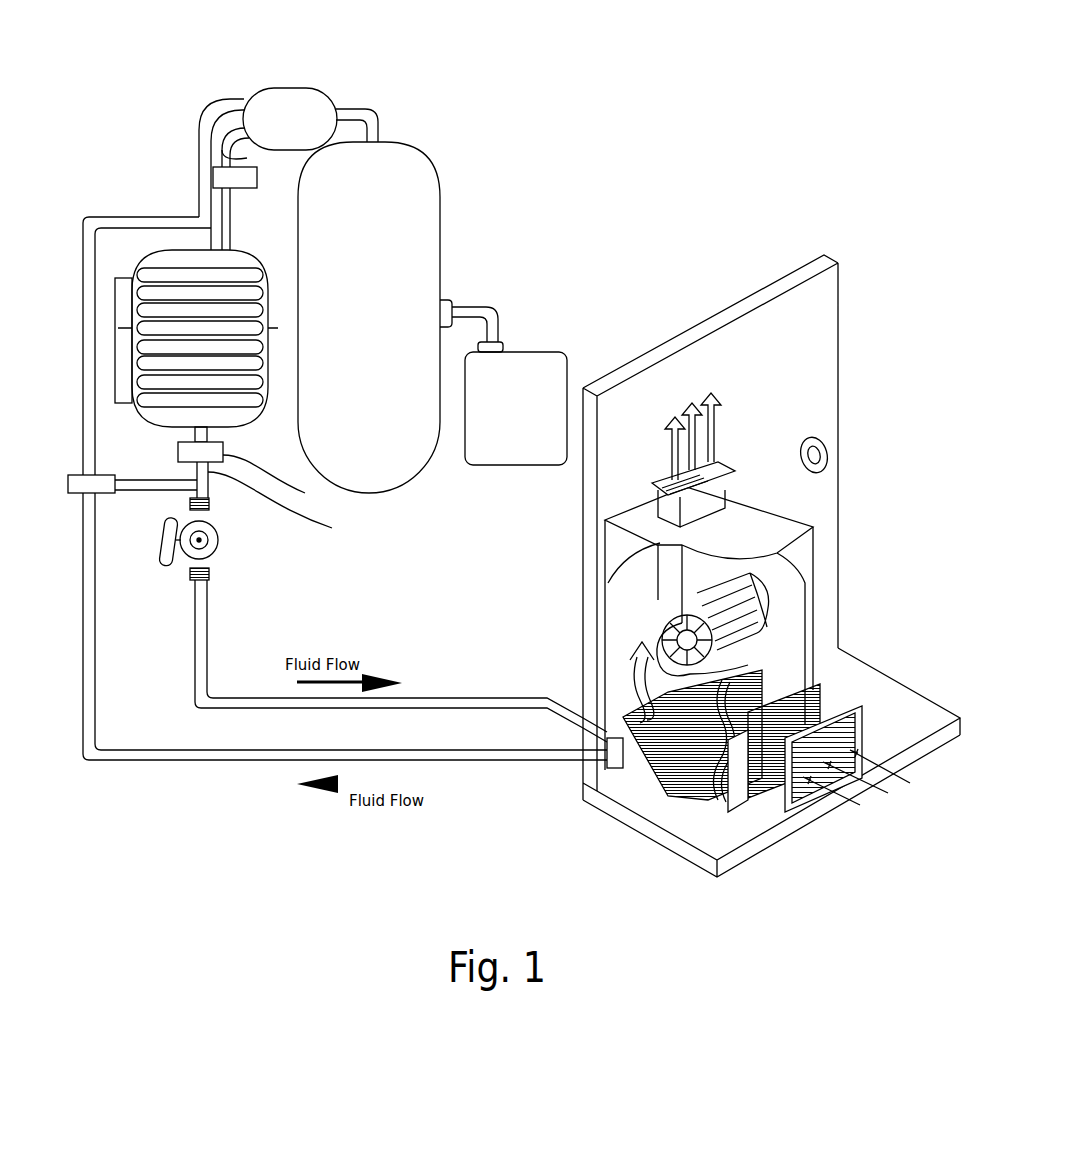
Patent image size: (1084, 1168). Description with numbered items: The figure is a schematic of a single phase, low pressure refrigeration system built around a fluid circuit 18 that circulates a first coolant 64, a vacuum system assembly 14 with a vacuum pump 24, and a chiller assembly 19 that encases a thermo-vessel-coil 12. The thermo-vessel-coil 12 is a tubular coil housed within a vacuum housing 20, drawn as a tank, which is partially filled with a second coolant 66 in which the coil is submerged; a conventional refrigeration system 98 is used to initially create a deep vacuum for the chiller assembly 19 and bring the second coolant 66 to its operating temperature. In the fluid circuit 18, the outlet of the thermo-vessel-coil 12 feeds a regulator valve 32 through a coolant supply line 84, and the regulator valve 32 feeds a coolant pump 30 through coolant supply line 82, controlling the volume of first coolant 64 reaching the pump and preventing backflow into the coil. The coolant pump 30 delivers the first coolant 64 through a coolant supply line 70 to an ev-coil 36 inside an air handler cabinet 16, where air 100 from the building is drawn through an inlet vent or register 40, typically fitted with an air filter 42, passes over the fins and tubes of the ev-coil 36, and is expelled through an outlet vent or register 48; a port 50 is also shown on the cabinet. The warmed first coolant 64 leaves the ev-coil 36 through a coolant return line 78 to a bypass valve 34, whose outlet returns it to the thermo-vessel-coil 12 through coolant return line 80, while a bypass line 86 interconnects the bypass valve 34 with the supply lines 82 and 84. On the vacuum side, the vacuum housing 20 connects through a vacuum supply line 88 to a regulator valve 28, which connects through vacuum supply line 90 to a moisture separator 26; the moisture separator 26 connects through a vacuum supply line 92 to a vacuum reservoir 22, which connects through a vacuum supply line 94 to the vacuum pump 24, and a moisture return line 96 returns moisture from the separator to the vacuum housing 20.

The thermo-vessel-coil 12 is at (155, 278).
The vacuum system assembly 14 is at (420, 92).
The air handler cabinet 16 is at (732, 378).
The fluid circuit 18 is at (70, 183).
The chiller assembly 19 is at (153, 245).
The vacuum housing 20 is at (135, 415).
The vacuum reservoir 22 is at (400, 492).
The vacuum pump 24 is at (545, 352).
The moisture separator 26 is at (292, 88).
The regulator valve 28 is at (258, 178).
The coolant pump 30 is at (220, 542).
The regulator valve 32 is at (283, 493).
The bypass valve 34 is at (83, 496).
The ev-coil 36 is at (680, 690).
The inlet vent or register 40 is at (870, 730).
The air filter 42 is at (805, 720).
The outlet vent or register 48 is at (724, 440).
The port 50 is at (826, 446).
The first coolant 64 is at (82, 628).
The second coolant 66 is at (262, 421).
The coolant supply line 70 is at (486, 696).
The coolant return line 78 is at (188, 762).
The coolant return line 80 is at (80, 335).
The coolant supply line 82 is at (298, 520).
The coolant supply line 84 is at (178, 452).
The bypass line 86 is at (150, 492).
The vacuum supply line 88 is at (232, 232).
The vacuum supply line 90 is at (231, 152).
The vacuum supply line 92 is at (341, 106).
The vacuum supply line 94 is at (492, 305).
The moisture return line 96 is at (229, 97).
The conventional refrigeration system 98 is at (115, 376).
The air 100 is at (845, 790).